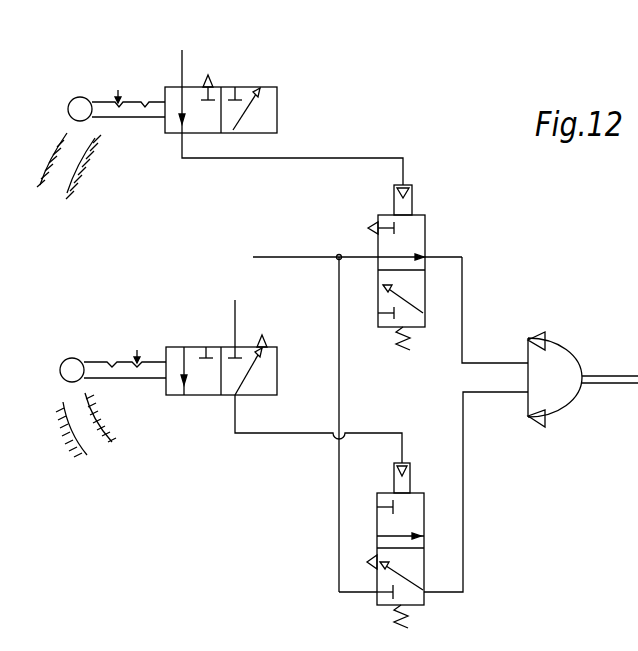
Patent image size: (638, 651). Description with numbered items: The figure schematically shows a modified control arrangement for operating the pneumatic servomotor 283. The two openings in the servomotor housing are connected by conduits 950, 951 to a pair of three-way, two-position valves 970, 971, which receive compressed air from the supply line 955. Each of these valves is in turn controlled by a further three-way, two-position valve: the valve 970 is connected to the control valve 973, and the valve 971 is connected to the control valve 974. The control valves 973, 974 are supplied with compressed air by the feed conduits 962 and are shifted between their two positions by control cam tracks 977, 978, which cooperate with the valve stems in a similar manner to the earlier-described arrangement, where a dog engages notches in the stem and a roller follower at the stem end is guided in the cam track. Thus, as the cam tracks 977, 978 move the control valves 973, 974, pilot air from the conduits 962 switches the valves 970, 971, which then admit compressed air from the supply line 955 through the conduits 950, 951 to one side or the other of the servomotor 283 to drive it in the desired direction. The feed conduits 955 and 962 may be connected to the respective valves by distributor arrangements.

The pneumatic servomotor 283 is at (570, 347).
The conduit 950 is at (463, 320).
The conduit 951 is at (463, 510).
The supply line 955 is at (300, 257).
The conduit 962 is at (182, 58).
The three-way, two-position valve 970 is at (427, 213).
The three-way, two-position valve 971 is at (424, 606).
The three-way, two-position valve 973 is at (277, 133).
The three-way, two-position valve 974 is at (166, 345).
The control cam track 977 is at (62, 195).
The control cam track 978 is at (108, 440).